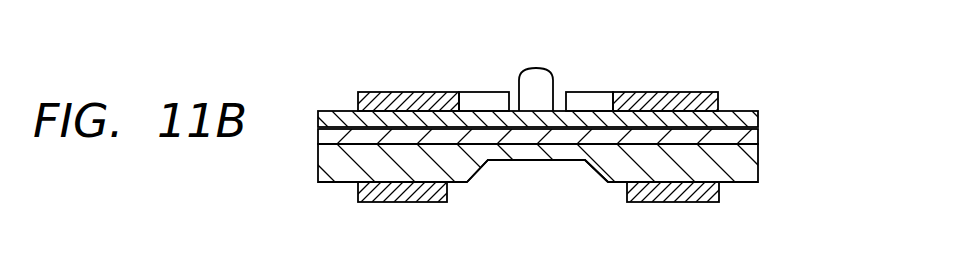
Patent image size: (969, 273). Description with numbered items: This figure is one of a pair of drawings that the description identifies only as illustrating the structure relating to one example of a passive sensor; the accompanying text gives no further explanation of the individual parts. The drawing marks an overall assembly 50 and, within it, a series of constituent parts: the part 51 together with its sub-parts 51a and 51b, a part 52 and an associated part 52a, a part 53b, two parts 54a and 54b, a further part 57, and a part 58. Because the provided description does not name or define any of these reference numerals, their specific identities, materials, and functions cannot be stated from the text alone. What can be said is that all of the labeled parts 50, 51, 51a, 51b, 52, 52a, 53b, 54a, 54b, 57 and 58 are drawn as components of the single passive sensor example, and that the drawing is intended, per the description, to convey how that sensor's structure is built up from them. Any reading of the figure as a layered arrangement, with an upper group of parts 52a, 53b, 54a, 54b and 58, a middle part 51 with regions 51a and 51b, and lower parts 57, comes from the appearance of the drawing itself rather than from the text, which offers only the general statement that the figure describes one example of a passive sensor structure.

The semiconductor device 50 is at (743, 66).
The substrate 51 is at (753, 167).
The insulating layer 51a is at (753, 133).
The recess 51b is at (527, 162).
The wiring layer 52 is at (756, 117).
The pad 52a is at (485, 96).
The pad 53b is at (588, 96).
The solder resist 54a is at (398, 94).
The solder resist 54b is at (660, 96).
The back-side electrode 57 is at (716, 193).
The bump 58 is at (534, 76).